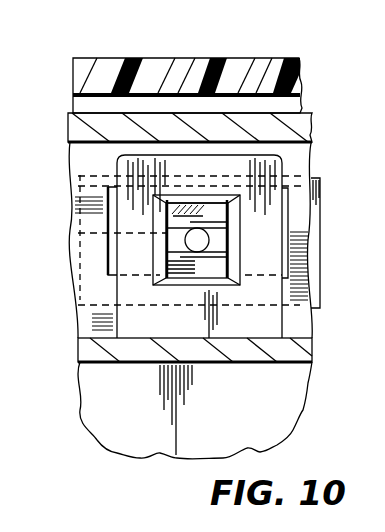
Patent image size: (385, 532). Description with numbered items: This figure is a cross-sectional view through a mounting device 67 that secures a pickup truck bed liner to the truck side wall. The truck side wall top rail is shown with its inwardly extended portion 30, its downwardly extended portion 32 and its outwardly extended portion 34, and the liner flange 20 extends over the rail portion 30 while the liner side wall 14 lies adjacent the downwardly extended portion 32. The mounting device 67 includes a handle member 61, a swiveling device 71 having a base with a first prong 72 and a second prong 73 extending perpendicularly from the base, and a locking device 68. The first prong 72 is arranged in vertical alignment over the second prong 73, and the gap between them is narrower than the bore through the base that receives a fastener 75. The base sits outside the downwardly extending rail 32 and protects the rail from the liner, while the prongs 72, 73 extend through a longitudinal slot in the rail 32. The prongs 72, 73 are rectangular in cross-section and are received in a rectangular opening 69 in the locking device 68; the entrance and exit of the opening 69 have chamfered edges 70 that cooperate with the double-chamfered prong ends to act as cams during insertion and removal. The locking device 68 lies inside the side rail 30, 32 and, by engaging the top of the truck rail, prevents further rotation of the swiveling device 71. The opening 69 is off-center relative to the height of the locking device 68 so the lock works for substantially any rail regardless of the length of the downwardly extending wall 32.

The side wall 14 is at (282, 415).
The flange 20 is at (113, 73).
The inwardly extended portion 30 is at (78, 130).
The downwardly extended portion 32 is at (85, 155).
The outwardly extended portion 34 is at (121, 353).
The handle member 61 is at (320, 190).
The mounting device 67 is at (316, 148).
The locking device 68 is at (98, 309).
The rectangular opening 69 is at (72, 233).
The chamfered edges 70 is at (166, 200).
The swiveling device 71 is at (204, 180).
The first prong 72 is at (193, 218).
The second prong 73 is at (208, 262).
The fastener 75 is at (196, 249).